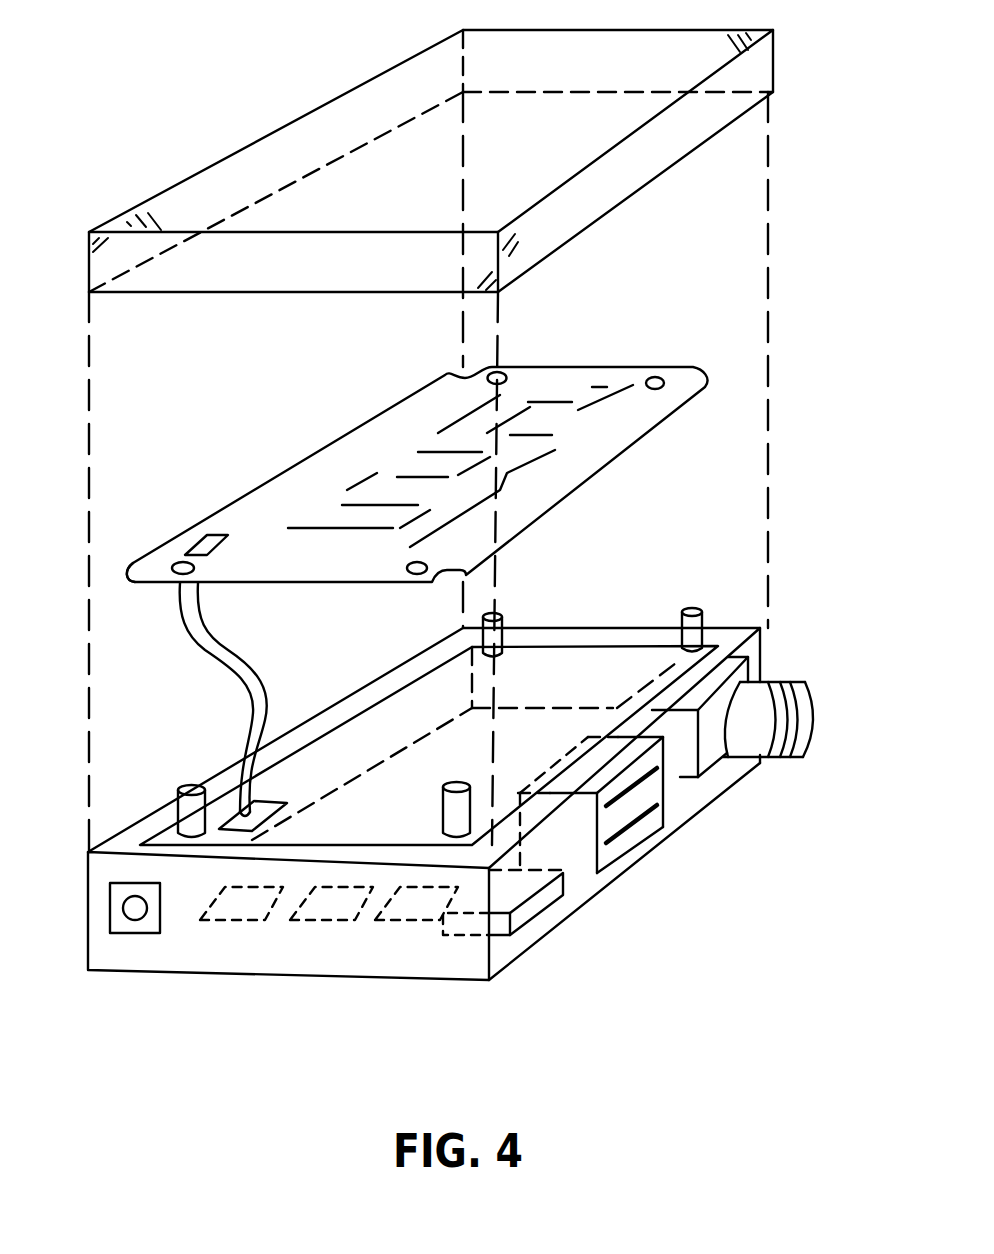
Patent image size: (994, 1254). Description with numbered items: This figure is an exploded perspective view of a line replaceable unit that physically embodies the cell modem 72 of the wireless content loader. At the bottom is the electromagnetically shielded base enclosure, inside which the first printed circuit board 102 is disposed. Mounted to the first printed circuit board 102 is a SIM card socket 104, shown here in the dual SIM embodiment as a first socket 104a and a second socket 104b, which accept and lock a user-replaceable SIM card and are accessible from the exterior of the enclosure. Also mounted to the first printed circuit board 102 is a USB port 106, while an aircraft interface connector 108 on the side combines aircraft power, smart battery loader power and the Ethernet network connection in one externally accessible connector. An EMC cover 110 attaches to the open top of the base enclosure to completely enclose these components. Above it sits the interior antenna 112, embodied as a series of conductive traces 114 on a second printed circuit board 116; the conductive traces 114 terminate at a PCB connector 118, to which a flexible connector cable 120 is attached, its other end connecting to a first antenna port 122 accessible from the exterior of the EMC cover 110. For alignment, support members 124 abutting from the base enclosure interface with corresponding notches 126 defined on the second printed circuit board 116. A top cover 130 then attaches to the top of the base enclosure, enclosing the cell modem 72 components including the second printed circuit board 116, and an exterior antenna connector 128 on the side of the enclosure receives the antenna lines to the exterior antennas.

The cell modem 72 is at (422, 824).
The first printed circuit board 102 is at (393, 780).
The SIM card socket 104 is at (622, 834).
The first socket 104a is at (656, 778).
The second socket 104b is at (627, 835).
The USB port 106 is at (533, 903).
The aircraft interface connector 108 is at (790, 752).
The EMC cover 110 is at (612, 637).
The interior antenna 112 is at (367, 459).
The conductive traces 114 is at (450, 423).
The second printed circuit board 116 is at (342, 437).
The PCB connector 118 is at (207, 547).
The flexible connector cable 120 is at (240, 682).
The first antenna port 122 is at (237, 823).
The support members 124 is at (185, 806).
The notches 126 is at (118, 577).
The exterior antenna connector 128 is at (185, 182).
The top cover 130 is at (123, 912).